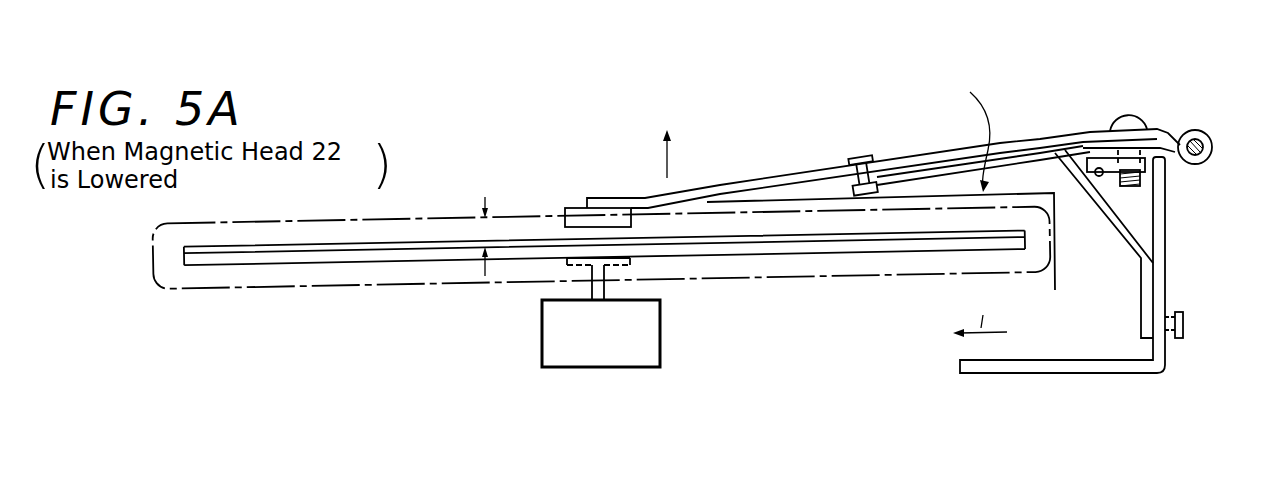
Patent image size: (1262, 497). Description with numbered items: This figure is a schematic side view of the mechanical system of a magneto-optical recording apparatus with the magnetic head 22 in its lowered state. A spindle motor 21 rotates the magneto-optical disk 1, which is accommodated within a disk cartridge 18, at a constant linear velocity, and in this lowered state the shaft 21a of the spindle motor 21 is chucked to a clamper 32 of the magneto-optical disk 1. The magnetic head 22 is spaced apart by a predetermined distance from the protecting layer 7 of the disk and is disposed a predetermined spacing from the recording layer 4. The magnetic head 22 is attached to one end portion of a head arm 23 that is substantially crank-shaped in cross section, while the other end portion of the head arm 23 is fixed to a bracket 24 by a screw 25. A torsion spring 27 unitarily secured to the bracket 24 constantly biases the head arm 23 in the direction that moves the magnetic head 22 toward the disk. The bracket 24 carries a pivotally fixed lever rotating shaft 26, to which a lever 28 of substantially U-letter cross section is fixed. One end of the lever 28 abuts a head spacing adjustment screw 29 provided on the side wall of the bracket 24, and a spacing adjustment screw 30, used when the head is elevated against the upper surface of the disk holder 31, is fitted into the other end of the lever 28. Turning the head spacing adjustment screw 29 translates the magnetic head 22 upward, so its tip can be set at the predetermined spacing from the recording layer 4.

The magneto-optical disk 1 is at (605, 303).
The recording layer 4 is at (786, 250).
The protecting layer 7 is at (808, 240).
The disk cartridge 18 is at (385, 285).
The spindle motor 21 is at (660, 343).
The shaft 21a is at (607, 291).
The magnetic head 22 is at (570, 210).
The head arm 23 is at (785, 178).
The bracket 24 is at (1030, 374).
The screw 25 is at (1127, 122).
The lever rotating shaft 26 is at (1103, 176).
The torsion spring 27 is at (1167, 130).
The lever 28 is at (1133, 245).
The head spacing adjustment screw 29 is at (1183, 312).
The spacing adjustment screw 30 is at (867, 158).
The disk holder 31 is at (1062, 284).
The clamper 32 is at (570, 264).